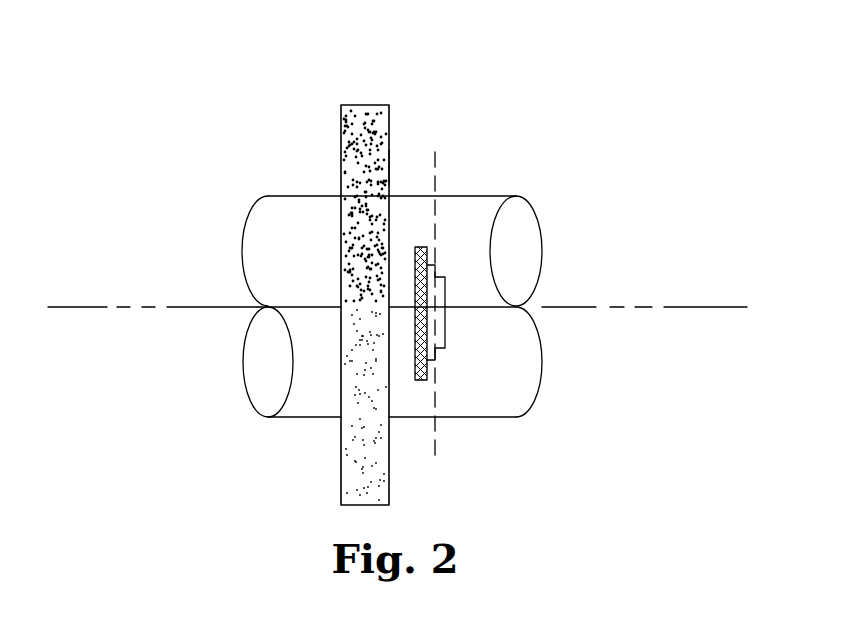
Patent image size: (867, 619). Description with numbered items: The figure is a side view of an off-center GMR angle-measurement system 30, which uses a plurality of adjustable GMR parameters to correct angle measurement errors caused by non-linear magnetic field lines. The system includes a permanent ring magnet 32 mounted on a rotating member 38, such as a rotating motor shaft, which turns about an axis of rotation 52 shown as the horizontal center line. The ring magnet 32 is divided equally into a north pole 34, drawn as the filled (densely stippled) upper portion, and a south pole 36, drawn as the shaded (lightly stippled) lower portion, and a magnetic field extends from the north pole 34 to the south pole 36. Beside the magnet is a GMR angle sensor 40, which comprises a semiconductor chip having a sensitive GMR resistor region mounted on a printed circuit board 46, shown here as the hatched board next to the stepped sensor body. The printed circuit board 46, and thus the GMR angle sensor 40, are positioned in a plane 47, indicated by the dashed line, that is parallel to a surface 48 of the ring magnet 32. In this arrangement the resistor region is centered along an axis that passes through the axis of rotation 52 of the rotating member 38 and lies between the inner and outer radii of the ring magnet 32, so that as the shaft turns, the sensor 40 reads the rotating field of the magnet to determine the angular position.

The off-center GMR angle-measurement system 30 is at (568, 77).
The permanent ring magnet 32 is at (355, 105).
The north pole 34 is at (380, 139).
The south pole 36 is at (370, 463).
The rotating member 38 is at (257, 242).
The GMR angle sensor 40 is at (438, 323).
The printed circuit board 46 is at (420, 245).
The plane 47 is at (435, 452).
The surface 48 is at (390, 167).
The axis of rotation 52 is at (645, 307).